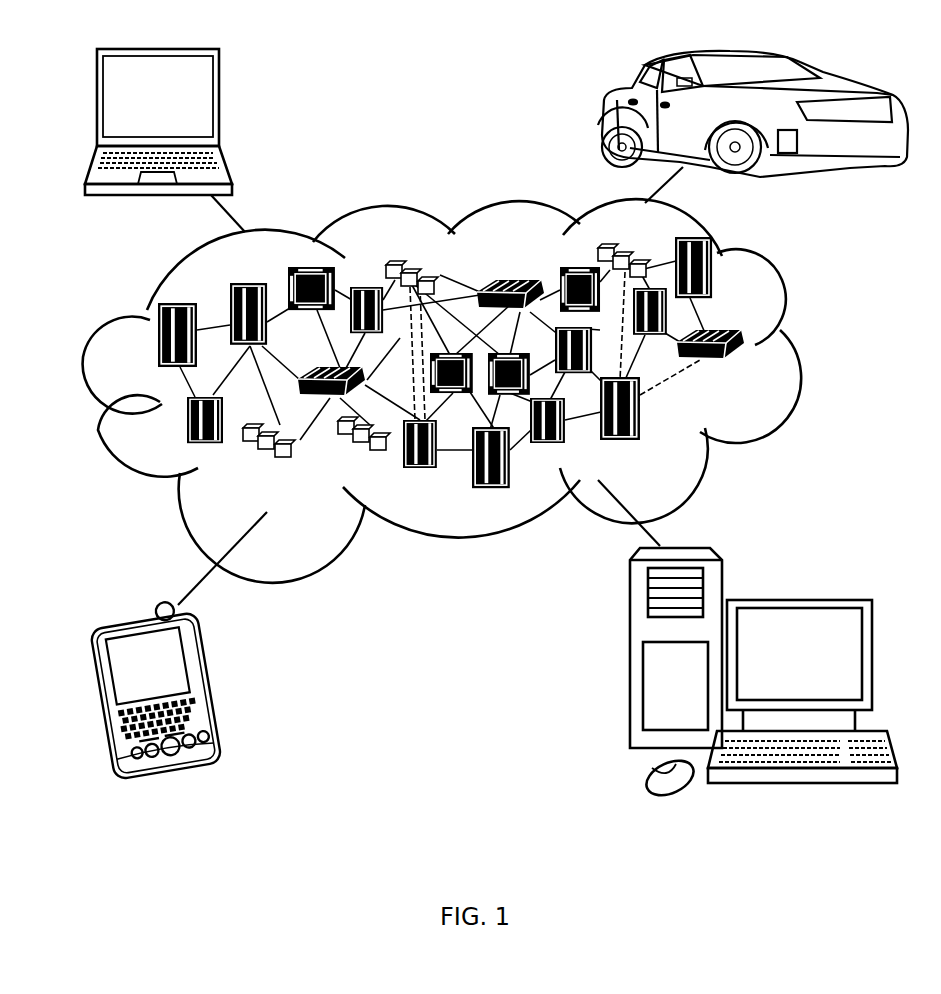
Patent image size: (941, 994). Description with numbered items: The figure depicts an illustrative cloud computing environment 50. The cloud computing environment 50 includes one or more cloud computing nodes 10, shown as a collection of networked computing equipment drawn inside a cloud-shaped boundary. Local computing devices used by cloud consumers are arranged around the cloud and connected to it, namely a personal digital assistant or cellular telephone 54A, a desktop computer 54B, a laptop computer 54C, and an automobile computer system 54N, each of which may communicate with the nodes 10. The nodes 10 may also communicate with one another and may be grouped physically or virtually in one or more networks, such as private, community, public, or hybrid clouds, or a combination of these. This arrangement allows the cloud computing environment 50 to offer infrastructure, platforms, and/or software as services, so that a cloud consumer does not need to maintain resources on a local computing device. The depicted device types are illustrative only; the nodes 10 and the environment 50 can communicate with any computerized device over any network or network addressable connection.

The cloud computing nodes 10 is at (750, 371).
The cloud computing environment 50 is at (796, 344).
The personal digital assistant (PDA) or cellular telephone 54A is at (213, 681).
The desktop computer 54B is at (797, 600).
The laptop computer 54C is at (220, 103).
The automobile computer system 54N is at (610, 118).